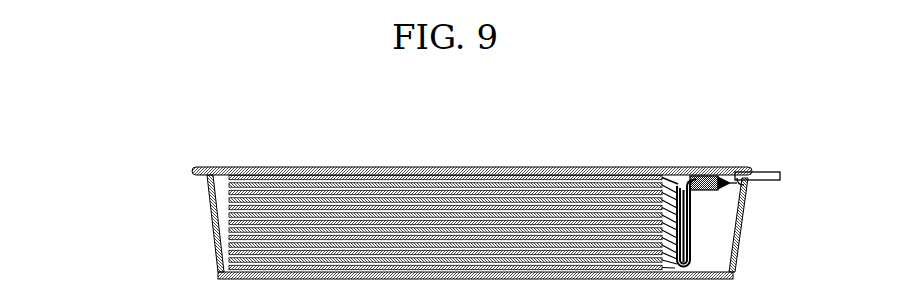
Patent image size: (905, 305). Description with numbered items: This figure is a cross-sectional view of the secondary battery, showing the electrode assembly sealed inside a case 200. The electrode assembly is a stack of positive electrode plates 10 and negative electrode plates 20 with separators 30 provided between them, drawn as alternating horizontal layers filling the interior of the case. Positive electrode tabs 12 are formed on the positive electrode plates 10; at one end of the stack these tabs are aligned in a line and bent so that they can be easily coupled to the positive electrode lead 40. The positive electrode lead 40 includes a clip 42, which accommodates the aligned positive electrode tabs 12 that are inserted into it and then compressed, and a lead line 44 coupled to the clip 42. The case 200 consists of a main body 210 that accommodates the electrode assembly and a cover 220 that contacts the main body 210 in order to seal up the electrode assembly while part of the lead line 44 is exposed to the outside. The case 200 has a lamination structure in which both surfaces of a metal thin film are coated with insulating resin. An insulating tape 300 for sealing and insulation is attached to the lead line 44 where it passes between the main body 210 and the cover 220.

The positive electrode plate 10 is at (310, 172).
The negative electrode plate 20 is at (400, 180).
The separator 30 is at (355, 180).
The positive electrode tab 12 is at (690, 168).
The positive electrode lead 40 is at (722, 131).
The clip 42 is at (706, 170).
The lead line 44 is at (732, 170).
The case 200 is at (420, 209).
The main body 210 is at (441, 227).
The cover 220 is at (216, 168).
The insulating tape 300 is at (745, 186).